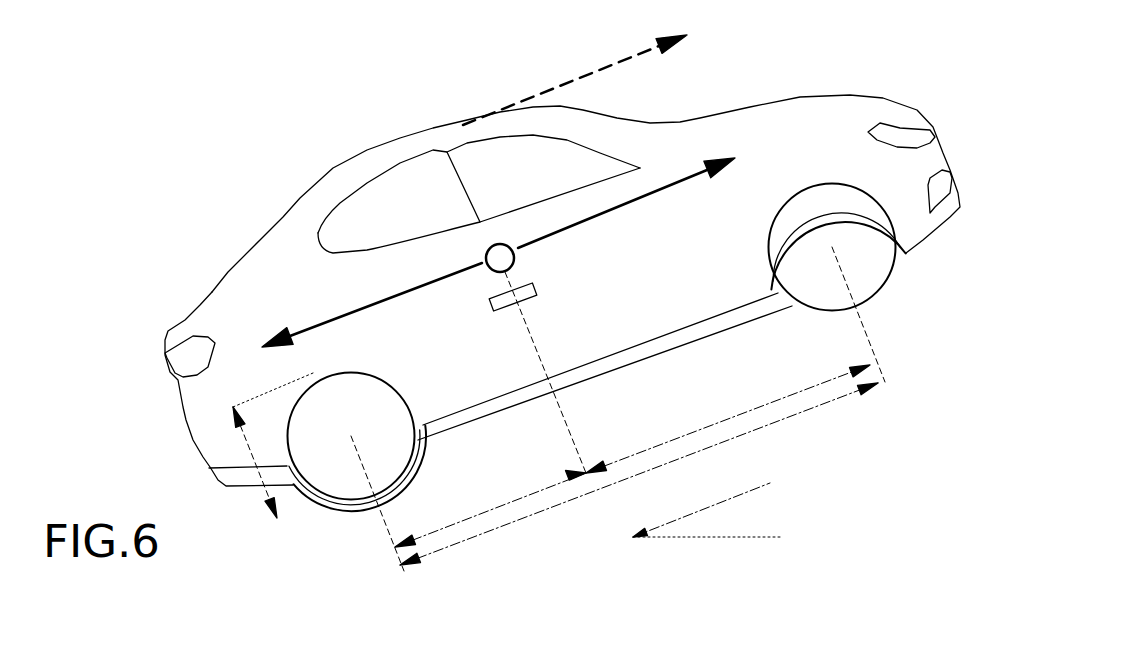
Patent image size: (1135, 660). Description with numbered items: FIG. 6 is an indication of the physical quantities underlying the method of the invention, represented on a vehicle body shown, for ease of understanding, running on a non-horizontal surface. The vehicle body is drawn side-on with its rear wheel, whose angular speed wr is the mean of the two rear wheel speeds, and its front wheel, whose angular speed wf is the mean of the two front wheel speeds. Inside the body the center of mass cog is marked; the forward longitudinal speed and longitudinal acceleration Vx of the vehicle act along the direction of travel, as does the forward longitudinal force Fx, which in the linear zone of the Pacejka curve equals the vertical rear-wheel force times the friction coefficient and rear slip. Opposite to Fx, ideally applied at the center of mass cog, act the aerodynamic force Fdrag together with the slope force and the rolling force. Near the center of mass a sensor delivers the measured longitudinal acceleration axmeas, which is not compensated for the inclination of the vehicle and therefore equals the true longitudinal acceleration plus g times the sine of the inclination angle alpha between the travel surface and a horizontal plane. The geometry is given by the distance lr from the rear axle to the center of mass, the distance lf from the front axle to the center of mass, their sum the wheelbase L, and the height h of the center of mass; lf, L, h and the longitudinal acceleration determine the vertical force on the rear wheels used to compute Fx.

The rear wheel angular speed wr is at (376, 442).
The front wheel angular speed wf is at (859, 247).
The center of mass of the vehicle cog is at (536, 358).
The measured longitudinal acceleration axmeas is at (577, 269).
The vehicle longitudinal speed and acceleration Vx is at (574, 74).
The forward longitudinal force Fx is at (626, 188).
The aerodynamic force Fdrag is at (336, 298).
The distance from rear axle to center of mass lr is at (490, 509).
The distance from front axle to center of mass lf is at (728, 419).
The wheelbase L is at (639, 474).
The height of the center of mass h is at (273, 446).
The inclination angle alpha is at (708, 510).
The vehicle body is at (562, 290).